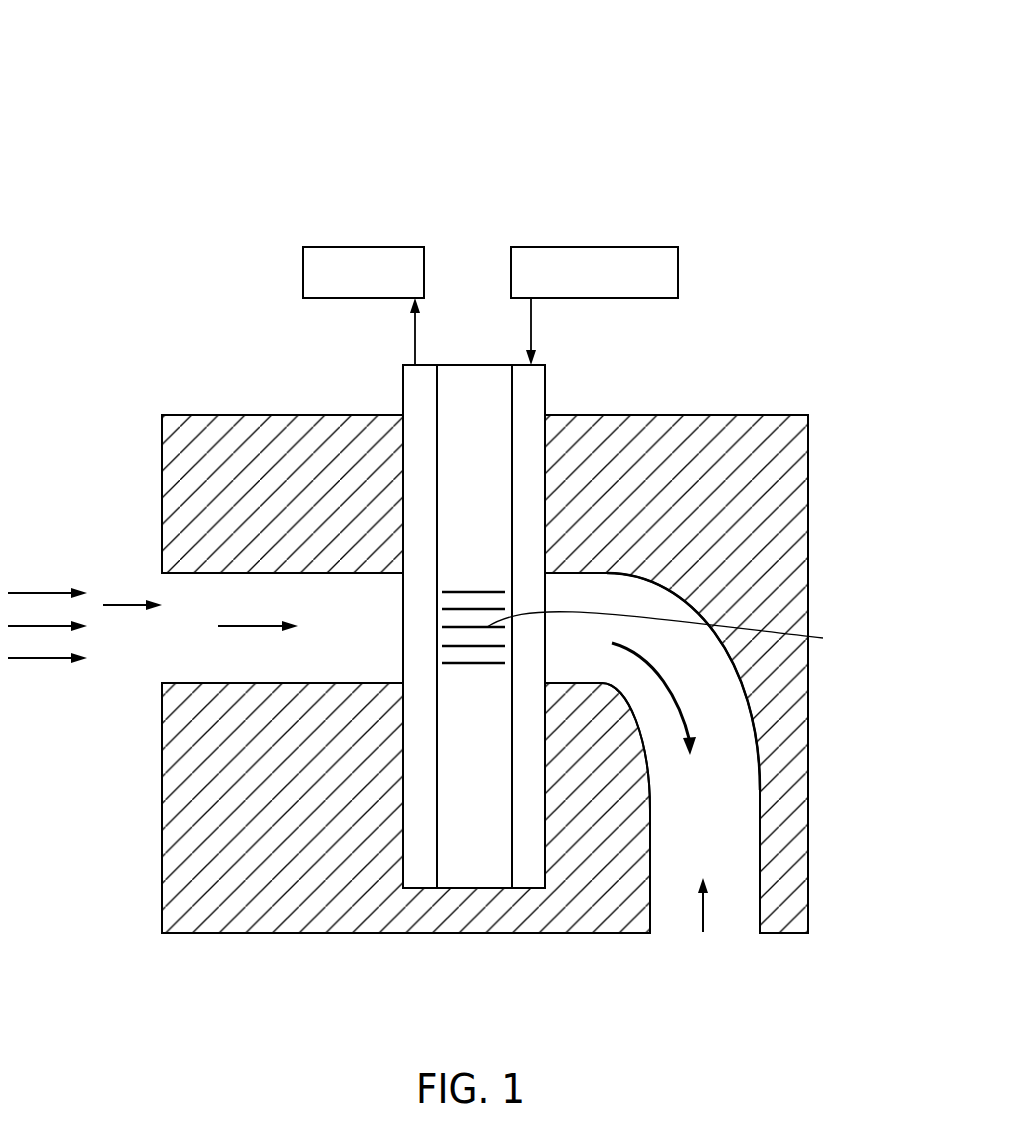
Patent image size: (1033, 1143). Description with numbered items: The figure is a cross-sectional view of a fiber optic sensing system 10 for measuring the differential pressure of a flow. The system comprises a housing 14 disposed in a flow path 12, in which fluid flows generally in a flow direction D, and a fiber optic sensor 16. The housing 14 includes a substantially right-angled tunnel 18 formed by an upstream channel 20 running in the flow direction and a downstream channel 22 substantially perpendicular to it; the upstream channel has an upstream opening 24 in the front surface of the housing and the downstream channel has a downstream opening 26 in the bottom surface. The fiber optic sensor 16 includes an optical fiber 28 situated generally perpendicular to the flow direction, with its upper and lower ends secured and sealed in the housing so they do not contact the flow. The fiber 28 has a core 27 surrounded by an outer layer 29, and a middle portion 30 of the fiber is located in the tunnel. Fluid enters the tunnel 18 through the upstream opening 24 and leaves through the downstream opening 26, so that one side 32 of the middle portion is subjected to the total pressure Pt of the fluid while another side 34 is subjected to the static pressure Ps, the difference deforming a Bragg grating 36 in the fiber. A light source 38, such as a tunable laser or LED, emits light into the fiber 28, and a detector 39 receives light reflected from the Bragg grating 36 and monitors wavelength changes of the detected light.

The fiber optic sensing system 10 is at (155, 77).
The flow path 12 is at (30, 593).
The housing 14 is at (162, 815).
The fiber optic sensor 16 is at (420, 877).
The tunnel 18 is at (723, 820).
The upstream channel 20 is at (247, 587).
The downstream channel 22 is at (747, 840).
The upstream opening 24 is at (173, 655).
The downstream opening 26 is at (702, 918).
The core 27 is at (462, 373).
The optical fiber 28 is at (533, 900).
The outer layer 29 is at (545, 380).
The middle portion 30 is at (530, 668).
The one side 32 is at (403, 636).
The another side 34 is at (630, 573).
The Bragg grating 36 is at (675, 633).
The light source 38 is at (678, 268).
The detector 39 is at (362, 247).